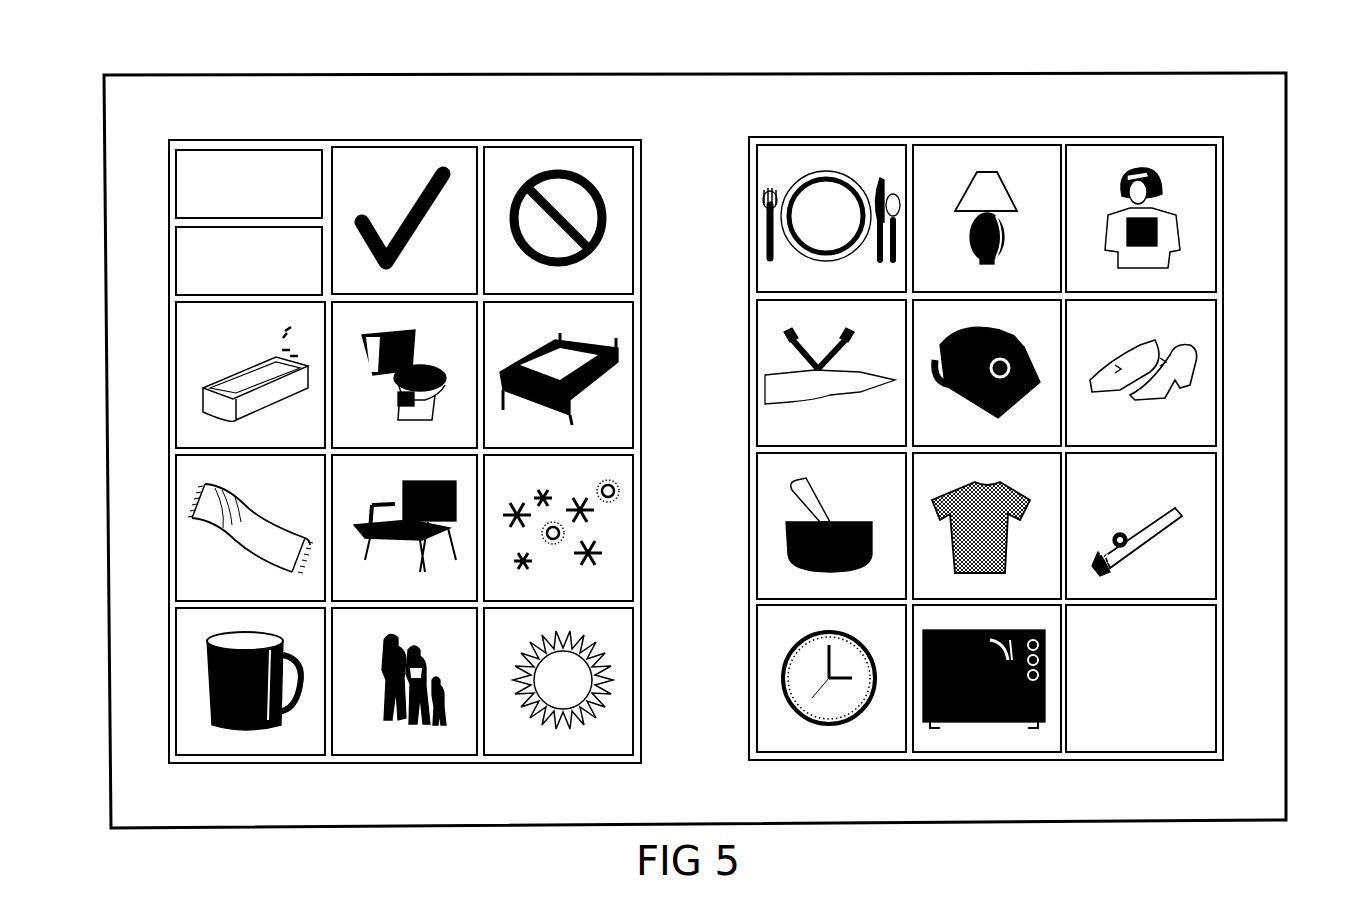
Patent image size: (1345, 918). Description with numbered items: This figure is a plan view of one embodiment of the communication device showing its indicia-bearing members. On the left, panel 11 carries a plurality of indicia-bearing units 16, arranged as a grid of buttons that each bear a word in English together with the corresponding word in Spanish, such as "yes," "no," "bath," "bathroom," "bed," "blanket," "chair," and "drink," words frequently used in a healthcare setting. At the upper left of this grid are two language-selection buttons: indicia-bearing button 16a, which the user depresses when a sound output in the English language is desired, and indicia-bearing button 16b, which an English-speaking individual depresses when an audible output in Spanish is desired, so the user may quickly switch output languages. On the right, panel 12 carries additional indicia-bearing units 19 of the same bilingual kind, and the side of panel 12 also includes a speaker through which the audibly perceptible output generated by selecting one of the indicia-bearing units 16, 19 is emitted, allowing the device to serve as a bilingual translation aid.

The panel 11 is at (358, 790).
The panel 12 is at (968, 780).
The indicia-bearing units 16 is at (363, 160).
The indicia-bearing button 16a is at (205, 155).
The indicia-bearing button 16b is at (169, 248).
The indicia-bearing units 19 is at (1203, 167).